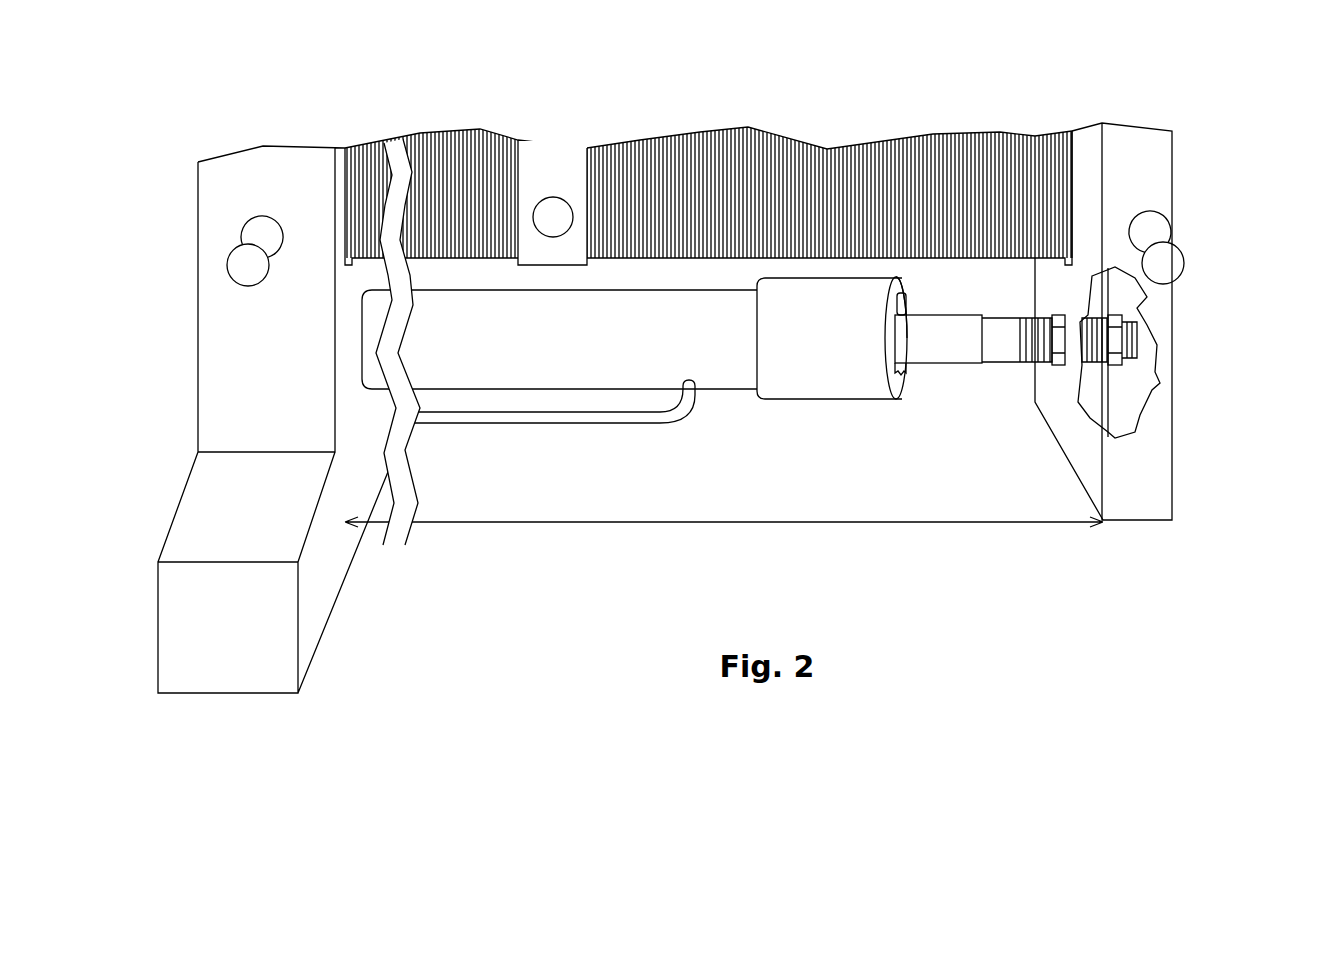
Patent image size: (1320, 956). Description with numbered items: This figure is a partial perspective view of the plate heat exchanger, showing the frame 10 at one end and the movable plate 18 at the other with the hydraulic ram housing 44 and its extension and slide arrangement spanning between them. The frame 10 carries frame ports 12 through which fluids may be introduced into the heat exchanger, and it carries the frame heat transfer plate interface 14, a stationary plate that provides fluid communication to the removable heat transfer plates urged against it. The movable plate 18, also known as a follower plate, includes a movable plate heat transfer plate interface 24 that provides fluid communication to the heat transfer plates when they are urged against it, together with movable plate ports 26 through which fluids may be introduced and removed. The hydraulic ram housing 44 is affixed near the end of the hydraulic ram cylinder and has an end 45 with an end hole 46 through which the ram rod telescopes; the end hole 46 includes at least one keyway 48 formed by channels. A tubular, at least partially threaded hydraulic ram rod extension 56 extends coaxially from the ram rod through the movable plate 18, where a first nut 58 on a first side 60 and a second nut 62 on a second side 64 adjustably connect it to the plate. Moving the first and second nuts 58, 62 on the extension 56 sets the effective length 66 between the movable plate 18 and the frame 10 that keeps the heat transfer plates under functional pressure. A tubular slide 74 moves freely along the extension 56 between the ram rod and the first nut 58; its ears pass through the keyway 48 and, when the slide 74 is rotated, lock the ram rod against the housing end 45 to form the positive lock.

The frame 10 is at (318, 600).
The frame ports 12 is at (243, 240).
The frame heat transfer plate interface 14 is at (343, 159).
The movable plate 18 is at (1155, 145).
The movable plate heat transfer plate interface 24 is at (1072, 175).
The movable plate ports 26 is at (1177, 262).
The hydraulic ram housing 44 is at (802, 382).
The housing end 45 is at (907, 286).
The end hole 46 is at (905, 392).
The keyway 48 is at (897, 293).
The hydraulic ram rod extension 56 is at (1033, 362).
The first nut 58 is at (1060, 313).
The first side 60 is at (1090, 470).
The second nut 62 is at (1115, 365).
The second side 64 is at (1173, 332).
The effective length 66 is at (645, 527).
The tubular slide 74 is at (963, 357).